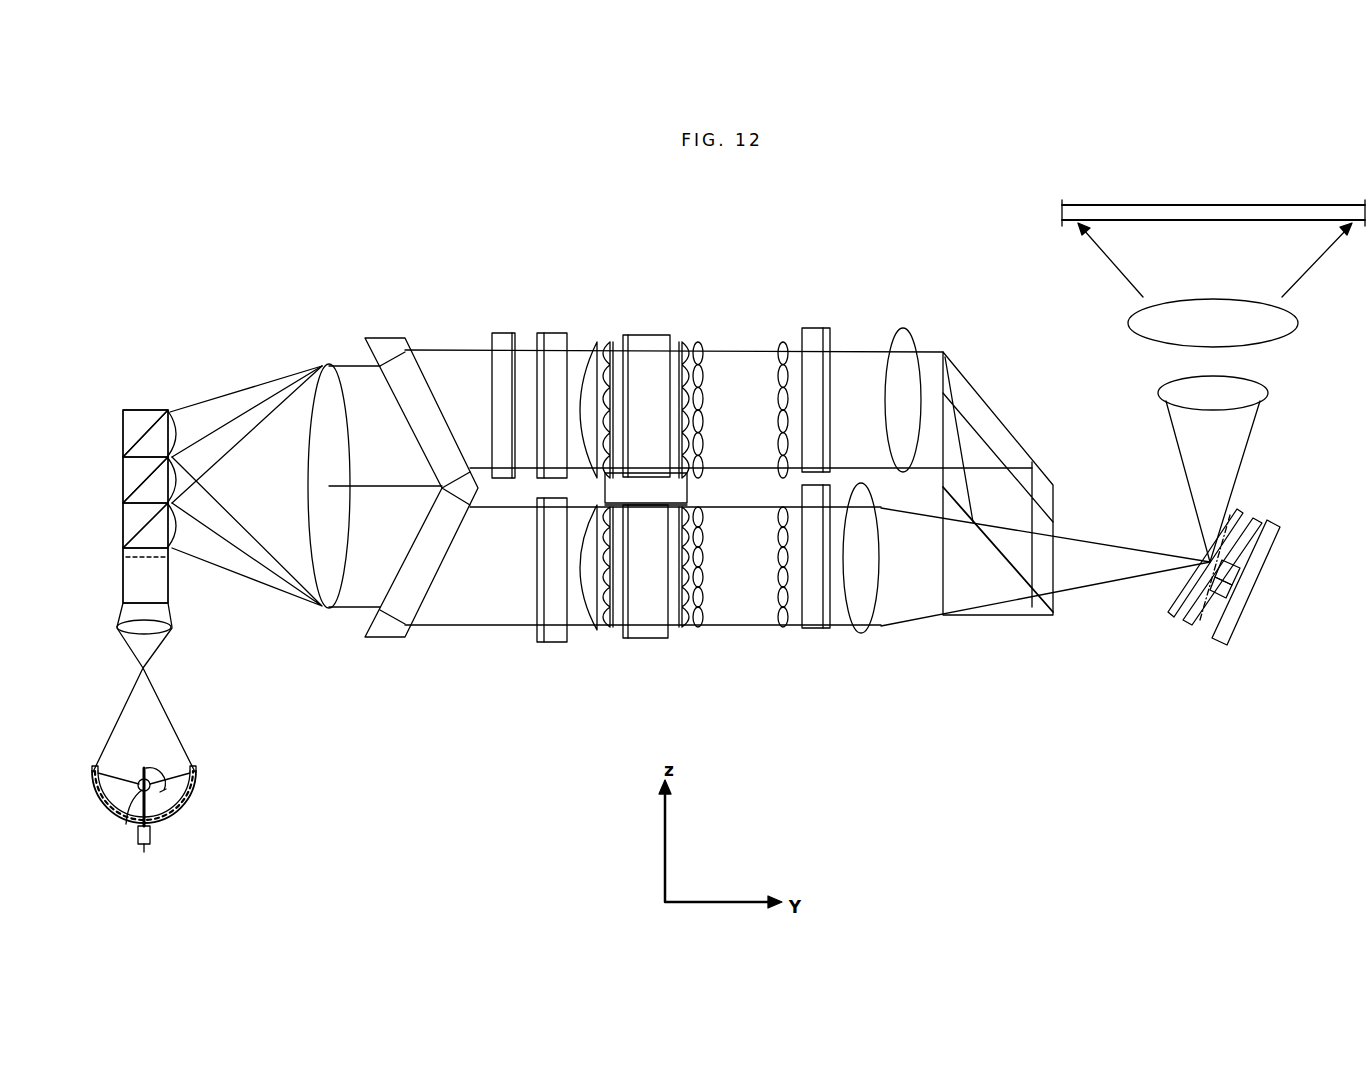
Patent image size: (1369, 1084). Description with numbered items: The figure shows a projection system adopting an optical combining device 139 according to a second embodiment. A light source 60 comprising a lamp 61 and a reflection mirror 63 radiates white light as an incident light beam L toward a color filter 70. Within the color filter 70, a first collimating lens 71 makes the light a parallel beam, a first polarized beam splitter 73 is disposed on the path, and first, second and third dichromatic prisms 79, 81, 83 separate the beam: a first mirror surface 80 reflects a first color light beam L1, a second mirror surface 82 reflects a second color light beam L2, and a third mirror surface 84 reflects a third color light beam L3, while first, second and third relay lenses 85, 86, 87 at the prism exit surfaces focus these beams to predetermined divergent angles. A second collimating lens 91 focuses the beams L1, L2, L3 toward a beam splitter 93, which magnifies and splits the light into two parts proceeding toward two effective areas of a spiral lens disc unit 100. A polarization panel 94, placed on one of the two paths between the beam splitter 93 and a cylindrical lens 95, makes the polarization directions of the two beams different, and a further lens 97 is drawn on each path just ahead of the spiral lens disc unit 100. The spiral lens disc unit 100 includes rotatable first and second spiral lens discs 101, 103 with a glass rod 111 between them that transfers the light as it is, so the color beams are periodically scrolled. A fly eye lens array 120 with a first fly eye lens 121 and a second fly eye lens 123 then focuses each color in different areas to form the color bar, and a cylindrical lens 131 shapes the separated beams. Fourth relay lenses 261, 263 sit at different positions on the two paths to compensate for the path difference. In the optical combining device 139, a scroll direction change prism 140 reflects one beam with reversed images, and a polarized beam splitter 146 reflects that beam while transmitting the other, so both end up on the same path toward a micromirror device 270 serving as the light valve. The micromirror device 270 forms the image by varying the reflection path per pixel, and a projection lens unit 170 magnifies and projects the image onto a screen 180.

The light source 60 is at (127, 809).
The lamp 61 is at (133, 801).
The reflection mirror 63 is at (172, 816).
The incident light beam L is at (127, 703).
The color filter 70 is at (127, 507).
The first collimating lens 71 is at (118, 627).
The first polarized beam splitter 73 is at (128, 583).
The first dichromatic prism 79 is at (125, 539).
The first mirror surface 80 is at (128, 526).
The second dichromatic prism 81 is at (125, 492).
The second mirror surface 82 is at (128, 480).
The third dichromatic prism 83 is at (125, 447).
The third mirror surface 84 is at (128, 434).
The first relay lens 85 is at (177, 533).
The second relay lens 86 is at (177, 481).
The third relay lens 87 is at (175, 421).
The first color light beam L1 is at (252, 388).
The second color light beam L2 is at (254, 416).
The third color light beam L3 is at (258, 430).
The second collimating lens 91 is at (329, 610).
The beam splitter 93 is at (380, 640).
The polarization panel 94 is at (503, 333).
The cylindrical lens 95 is at (549, 643).
The lens 97 is at (594, 633).
The spiral lens disc unit 100 is at (644, 502).
The first spiral lens disc 101 is at (610, 630).
The second spiral lens disc 103 is at (670, 509).
The glass rod 111 is at (647, 335).
The fly eye lens array 120 is at (740, 527).
The first fly eye lens 121 is at (698, 630).
The second fly eye lens 123 is at (767, 509).
The cylindrical lens 131 is at (815, 630).
The optical combining device 139 is at (1008, 466).
The scroll direction change prism 140 is at (995, 412).
The polarized beam splitter 146 is at (1054, 617).
The fourth relay lens 261 is at (903, 329).
The fourth relay lens 263 is at (861, 635).
The micromirror device 270 is at (1195, 643).
The projection lens unit 170 is at (1124, 322).
The screen 180 is at (1216, 204).